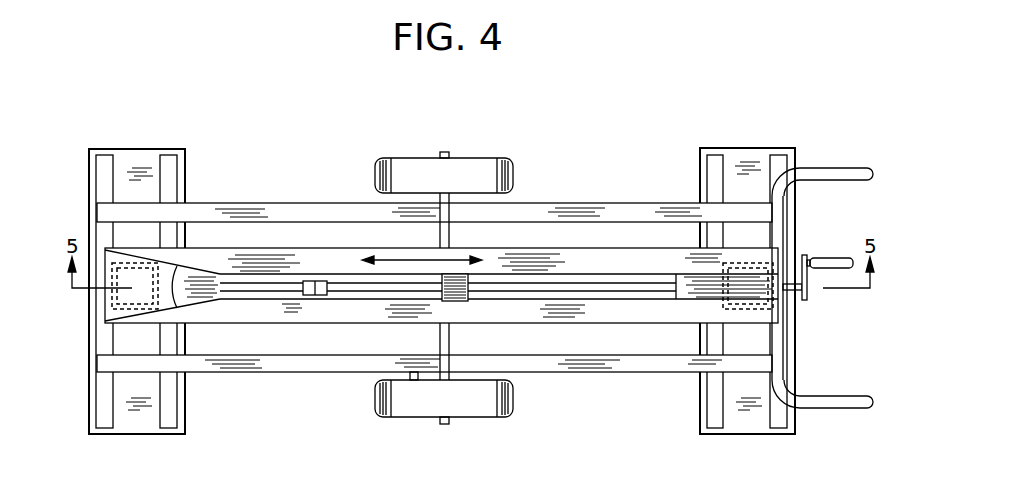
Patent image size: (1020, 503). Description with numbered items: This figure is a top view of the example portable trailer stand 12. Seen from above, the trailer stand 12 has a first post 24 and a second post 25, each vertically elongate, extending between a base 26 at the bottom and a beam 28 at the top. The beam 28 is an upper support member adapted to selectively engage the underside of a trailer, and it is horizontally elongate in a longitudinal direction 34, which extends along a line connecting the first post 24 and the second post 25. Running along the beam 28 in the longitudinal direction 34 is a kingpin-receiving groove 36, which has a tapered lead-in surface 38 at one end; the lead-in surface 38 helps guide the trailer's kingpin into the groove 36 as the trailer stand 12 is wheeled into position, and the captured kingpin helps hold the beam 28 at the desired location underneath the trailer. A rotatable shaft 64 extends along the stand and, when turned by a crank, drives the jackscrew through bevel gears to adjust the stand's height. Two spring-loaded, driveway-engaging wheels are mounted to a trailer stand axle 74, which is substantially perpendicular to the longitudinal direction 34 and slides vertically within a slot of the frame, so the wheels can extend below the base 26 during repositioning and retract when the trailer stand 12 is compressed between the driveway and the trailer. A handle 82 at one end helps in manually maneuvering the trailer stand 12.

The trailer stand 12 is at (747, 104).
The first post 24 is at (112, 298).
The second post 25 is at (757, 307).
The base 26 is at (132, 148).
The beam 28 is at (562, 248).
The longitudinal direction 34 is at (457, 258).
The kingpin-receiving groove 36 is at (275, 282).
The tapered lead-in surface 38 is at (172, 290).
The rotatable shaft 64 is at (632, 292).
The trailer stand axle 74 is at (440, 338).
The handle 82 is at (840, 167).